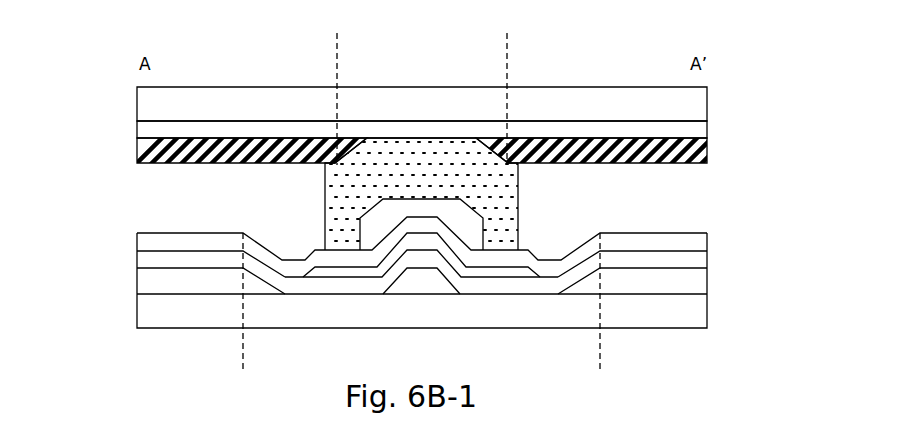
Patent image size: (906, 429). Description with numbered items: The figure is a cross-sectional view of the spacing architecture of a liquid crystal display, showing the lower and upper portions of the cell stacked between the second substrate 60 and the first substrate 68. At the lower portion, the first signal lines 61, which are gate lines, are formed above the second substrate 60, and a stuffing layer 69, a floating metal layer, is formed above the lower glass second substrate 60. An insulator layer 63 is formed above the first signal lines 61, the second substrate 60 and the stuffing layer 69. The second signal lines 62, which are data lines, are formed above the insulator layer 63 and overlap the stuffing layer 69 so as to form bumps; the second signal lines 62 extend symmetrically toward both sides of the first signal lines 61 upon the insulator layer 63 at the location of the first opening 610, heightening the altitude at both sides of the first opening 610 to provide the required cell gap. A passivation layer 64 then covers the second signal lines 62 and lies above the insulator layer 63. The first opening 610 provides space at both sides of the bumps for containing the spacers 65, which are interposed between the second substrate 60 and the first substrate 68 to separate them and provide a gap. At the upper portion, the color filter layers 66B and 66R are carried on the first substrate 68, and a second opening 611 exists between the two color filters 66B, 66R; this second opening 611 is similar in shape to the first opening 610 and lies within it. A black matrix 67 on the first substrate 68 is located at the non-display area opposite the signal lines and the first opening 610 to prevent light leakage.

The second substrate 60 is at (167, 312).
The first signal lines 61 is at (155, 285).
The second signal lines 62 is at (423, 242).
The insulator layer 63 is at (150, 261).
The passivation layer 64 is at (150, 243).
The spacers 65 is at (430, 194).
The color filter layer 66B is at (145, 157).
The color filter layer 66R is at (707, 158).
The black matrix 67 is at (149, 129).
The first substrate 68 is at (149, 103).
The stuffing layer 69 is at (418, 287).
The first opening 610 is at (600, 355).
The second opening 611 is at (507, 53).